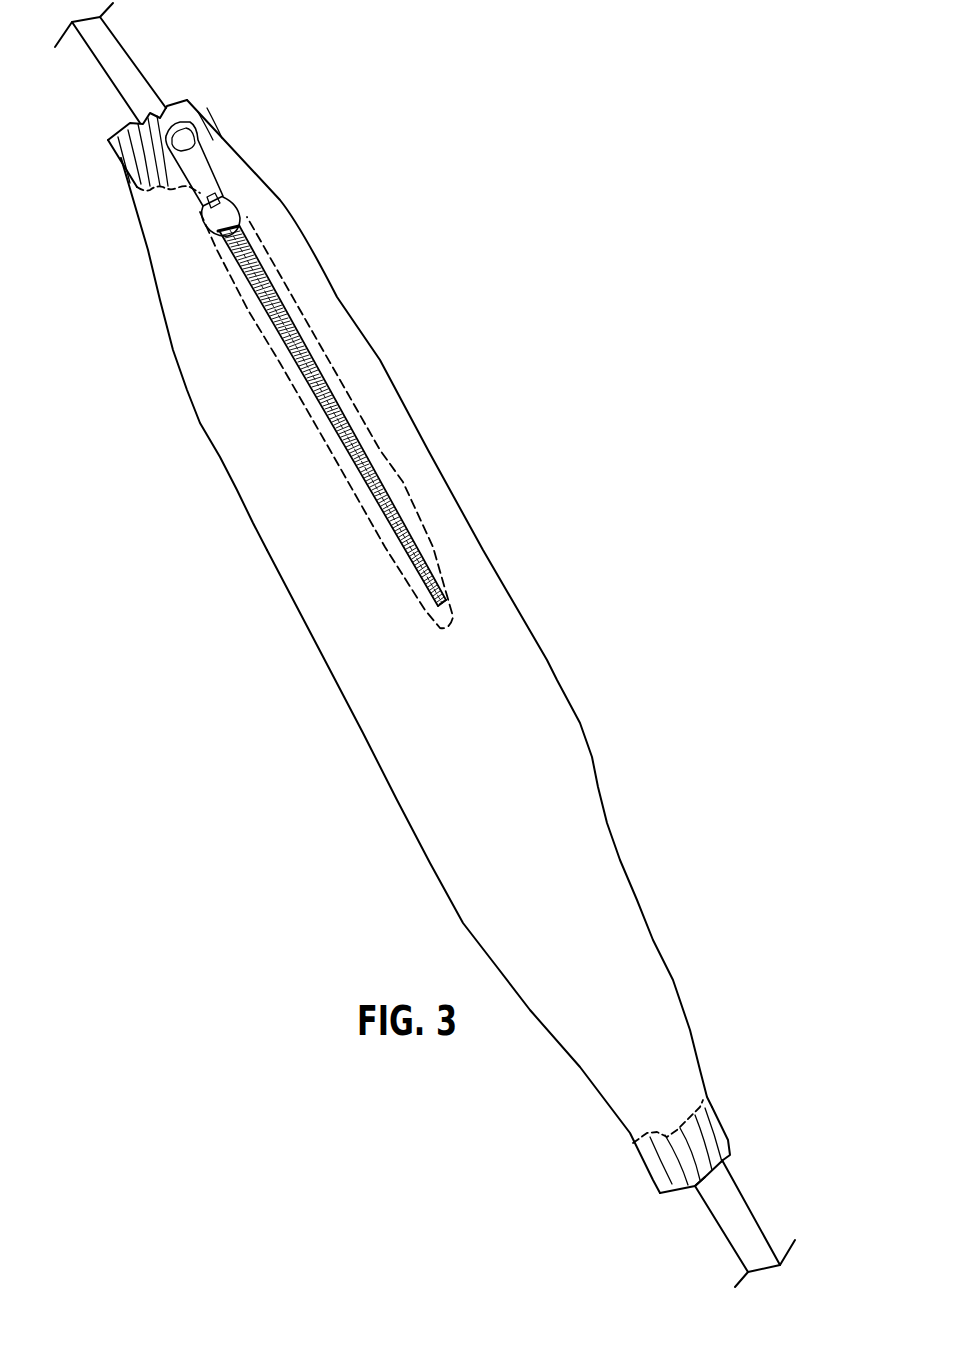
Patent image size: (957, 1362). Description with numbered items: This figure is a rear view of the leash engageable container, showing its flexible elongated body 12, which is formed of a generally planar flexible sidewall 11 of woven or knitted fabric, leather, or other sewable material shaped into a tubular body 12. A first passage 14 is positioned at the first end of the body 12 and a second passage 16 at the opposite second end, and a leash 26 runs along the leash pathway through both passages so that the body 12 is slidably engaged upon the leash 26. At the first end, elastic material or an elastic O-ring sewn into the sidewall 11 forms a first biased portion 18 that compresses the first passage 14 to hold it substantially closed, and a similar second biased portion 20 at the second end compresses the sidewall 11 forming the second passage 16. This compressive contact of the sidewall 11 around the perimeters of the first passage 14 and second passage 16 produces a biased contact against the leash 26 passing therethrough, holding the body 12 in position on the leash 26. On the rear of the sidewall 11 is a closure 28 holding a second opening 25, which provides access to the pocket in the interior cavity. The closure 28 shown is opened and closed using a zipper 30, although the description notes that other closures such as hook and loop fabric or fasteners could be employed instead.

The sidewall 11 is at (430, 497).
The body 12 is at (493, 560).
The first passage 14 is at (130, 120).
The second passage 16 is at (696, 1190).
The first biased portion 18 is at (124, 167).
The second biased portion 20 is at (712, 1112).
The second opening 25 is at (445, 608).
The leash 26 is at (128, 88).
The closure 28 is at (303, 360).
The zipper 30 is at (236, 213).